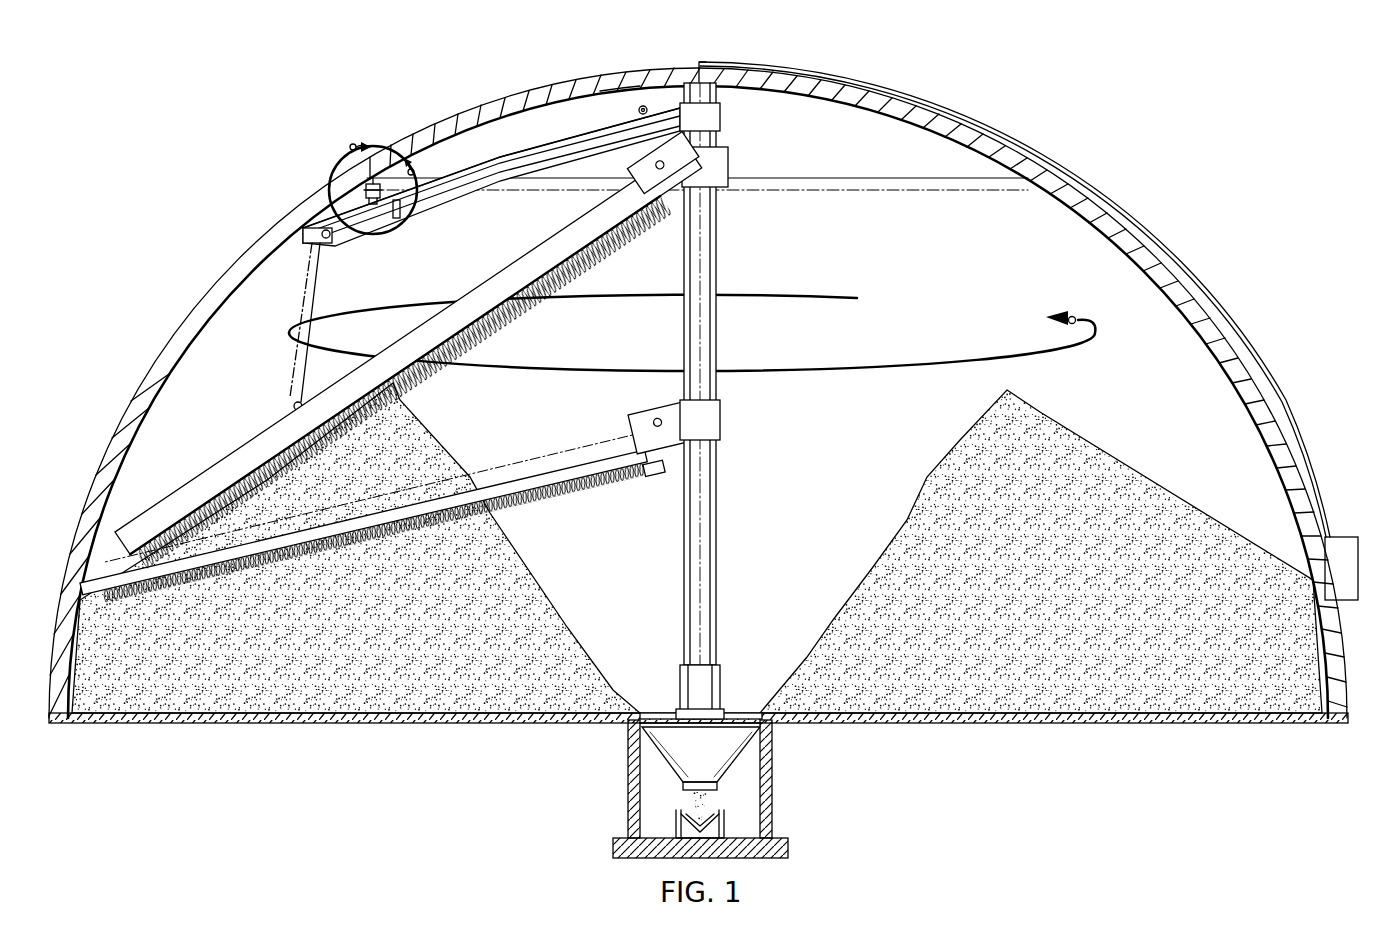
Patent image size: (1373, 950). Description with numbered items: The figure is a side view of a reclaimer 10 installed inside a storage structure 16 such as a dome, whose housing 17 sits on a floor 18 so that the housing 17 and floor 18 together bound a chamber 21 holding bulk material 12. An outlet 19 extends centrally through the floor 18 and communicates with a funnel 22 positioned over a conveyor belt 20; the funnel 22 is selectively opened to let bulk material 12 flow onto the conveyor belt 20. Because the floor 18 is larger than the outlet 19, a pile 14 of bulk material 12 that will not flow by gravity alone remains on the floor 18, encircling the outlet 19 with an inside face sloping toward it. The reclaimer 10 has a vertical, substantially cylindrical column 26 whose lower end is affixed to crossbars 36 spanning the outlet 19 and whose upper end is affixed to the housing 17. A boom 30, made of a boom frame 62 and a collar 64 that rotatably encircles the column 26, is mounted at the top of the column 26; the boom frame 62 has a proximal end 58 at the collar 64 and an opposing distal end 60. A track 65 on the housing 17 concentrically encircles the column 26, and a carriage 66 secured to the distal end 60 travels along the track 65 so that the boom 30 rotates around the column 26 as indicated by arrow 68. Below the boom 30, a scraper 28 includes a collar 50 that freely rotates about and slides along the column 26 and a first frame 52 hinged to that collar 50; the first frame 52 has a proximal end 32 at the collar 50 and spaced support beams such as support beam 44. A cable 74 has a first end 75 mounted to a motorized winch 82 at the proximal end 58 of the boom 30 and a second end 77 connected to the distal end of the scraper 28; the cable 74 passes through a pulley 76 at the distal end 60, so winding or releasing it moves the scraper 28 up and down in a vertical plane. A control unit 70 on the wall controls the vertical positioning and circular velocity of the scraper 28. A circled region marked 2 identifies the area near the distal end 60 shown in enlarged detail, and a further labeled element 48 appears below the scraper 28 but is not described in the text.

The detail view section indicator 2 is at (383, 176).
The reclaimer 10 is at (746, 567).
The bulk material 12 is at (560, 628).
The pile 14 is at (1060, 404).
The storage structure 16 is at (530, 92).
The housing 17 is at (247, 257).
The floor 18 is at (493, 733).
The outlet 19 is at (665, 717).
The conveyor belt 20 is at (705, 812).
The chamber 21 is at (968, 279).
The funnel 22 is at (686, 748).
The column 26 is at (718, 258).
The scraper 28 is at (406, 351).
The boom 30 is at (310, 260).
The proximal end 32 is at (606, 193).
The crossbars 36 is at (734, 715).
The support beam 44 is at (488, 298).
The lower sweep auger 48 is at (216, 471).
The collar 50 is at (730, 170).
The first frame 52 is at (412, 345).
The proximal end 58 is at (615, 108).
The distal end 60 is at (340, 253).
The boom frame 62 is at (497, 160).
The collar 64 is at (722, 120).
The track 65 is at (902, 192).
The carriage 66 is at (378, 168).
The arrow 68 is at (846, 372).
The control unit 70 is at (1332, 538).
The cable 74 is at (312, 300).
The first end 75 is at (634, 106).
The pulley 76 is at (324, 229).
The second end 77 is at (308, 378).
The motorized winch 82 is at (646, 108).